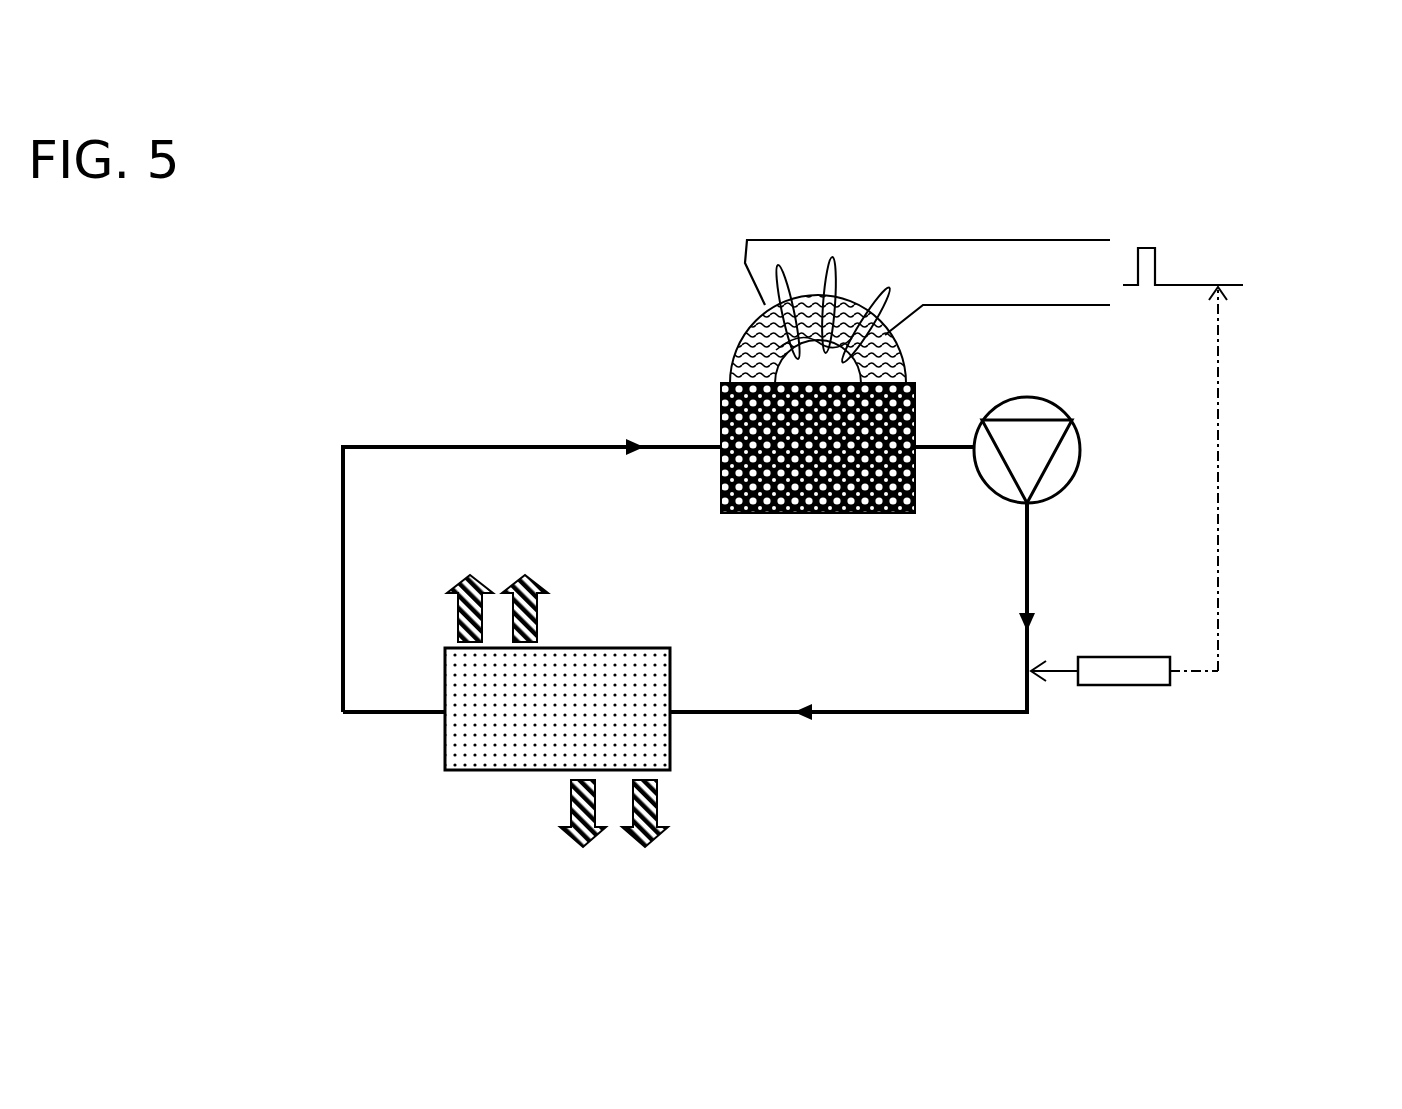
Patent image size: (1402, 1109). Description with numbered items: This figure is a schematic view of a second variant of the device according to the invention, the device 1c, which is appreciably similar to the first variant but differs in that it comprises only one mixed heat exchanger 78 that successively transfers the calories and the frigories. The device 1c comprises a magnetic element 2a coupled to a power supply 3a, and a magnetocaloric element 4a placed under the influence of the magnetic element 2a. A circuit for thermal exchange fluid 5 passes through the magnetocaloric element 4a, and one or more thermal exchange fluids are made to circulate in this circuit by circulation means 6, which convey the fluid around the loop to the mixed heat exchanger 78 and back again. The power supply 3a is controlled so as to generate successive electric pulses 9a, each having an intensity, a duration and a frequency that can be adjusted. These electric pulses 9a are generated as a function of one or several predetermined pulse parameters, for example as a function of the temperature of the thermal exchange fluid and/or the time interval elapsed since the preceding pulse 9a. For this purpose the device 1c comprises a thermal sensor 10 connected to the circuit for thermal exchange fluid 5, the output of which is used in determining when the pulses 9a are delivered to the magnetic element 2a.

The device 1c is at (300, 722).
The magnetic element 2a is at (750, 335).
The power supply 3a is at (965, 234).
The magnetocaloric element 4a is at (720, 433).
The circuit for thermal exchange fluid 5 is at (343, 515).
The circulation means 6 is at (1055, 450).
The mixed heat exchanger 78 is at (610, 725).
The electric pulse 9a is at (1177, 267).
The thermal sensor 10 is at (1113, 672).